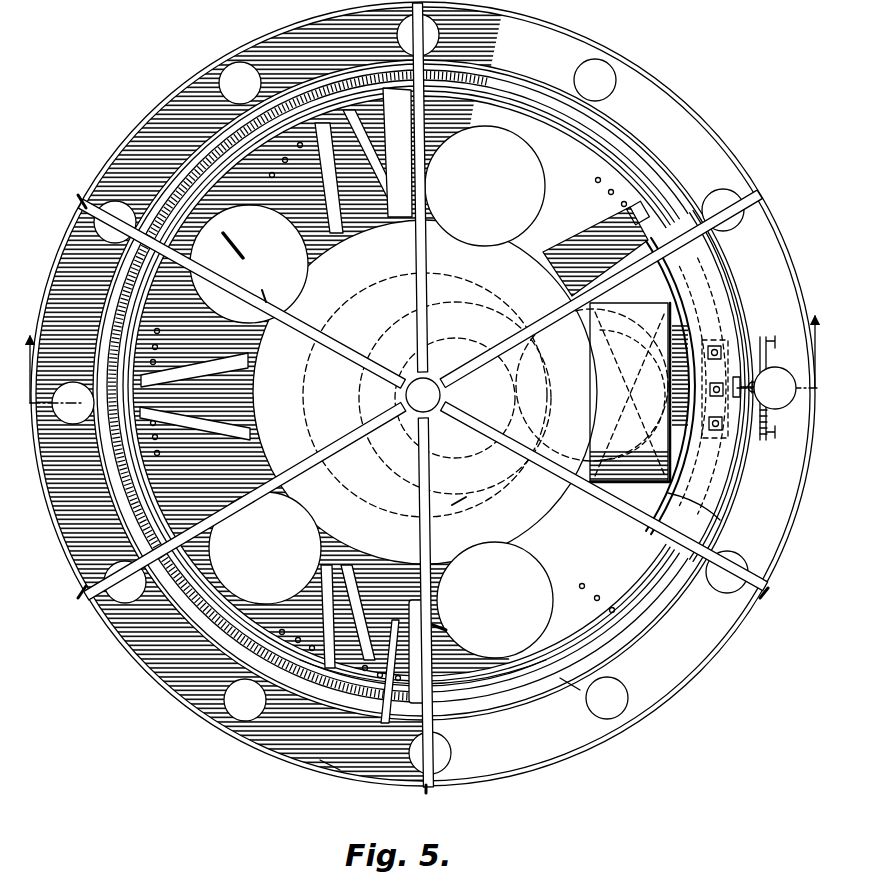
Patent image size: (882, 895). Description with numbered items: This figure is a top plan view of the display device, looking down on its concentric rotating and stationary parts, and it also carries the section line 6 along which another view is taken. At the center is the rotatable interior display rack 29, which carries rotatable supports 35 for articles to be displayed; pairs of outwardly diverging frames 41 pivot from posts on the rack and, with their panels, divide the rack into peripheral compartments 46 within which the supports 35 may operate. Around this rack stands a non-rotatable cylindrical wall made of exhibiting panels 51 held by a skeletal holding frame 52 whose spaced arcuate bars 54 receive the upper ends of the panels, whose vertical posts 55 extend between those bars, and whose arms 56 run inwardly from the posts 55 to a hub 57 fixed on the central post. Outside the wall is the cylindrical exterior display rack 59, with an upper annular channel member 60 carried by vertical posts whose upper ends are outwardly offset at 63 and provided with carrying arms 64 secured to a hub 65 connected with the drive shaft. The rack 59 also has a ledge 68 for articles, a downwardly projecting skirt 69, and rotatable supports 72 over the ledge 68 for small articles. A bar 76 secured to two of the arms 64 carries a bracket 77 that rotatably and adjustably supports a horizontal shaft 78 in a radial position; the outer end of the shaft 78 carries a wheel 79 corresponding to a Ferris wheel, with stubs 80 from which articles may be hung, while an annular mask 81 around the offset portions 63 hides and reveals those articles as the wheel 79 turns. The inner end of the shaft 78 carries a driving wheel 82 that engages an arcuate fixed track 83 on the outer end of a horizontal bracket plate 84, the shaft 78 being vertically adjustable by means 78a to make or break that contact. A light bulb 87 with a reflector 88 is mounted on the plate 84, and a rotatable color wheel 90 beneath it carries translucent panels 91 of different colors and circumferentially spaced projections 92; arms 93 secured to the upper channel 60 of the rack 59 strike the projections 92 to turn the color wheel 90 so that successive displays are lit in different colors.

The section line 6- 6 is at (419, 344).
The interior display rack 29 is at (600, 632).
The rotatable supports 35 is at (371, 392).
The outwardly diverging frames 41 is at (220, 378).
The peripheral compartments 46 is at (576, 591).
The exhibiting panels 51 is at (640, 152).
The skeletal holding frame 52 is at (523, 688).
The arcuate bars 54 is at (560, 678).
The vertical posts 55 is at (687, 568).
The arms 56 is at (421, 189).
The hub 57 is at (458, 506).
The exterior display rack 59 is at (167, 690).
The upper annular channel member 60 is at (495, 720).
The outwardly offset portions 63 is at (88, 203).
The carrying arms 64 is at (438, 549).
The hub 65 is at (425, 392).
The ledge 68 is at (330, 768).
The skirt 69 is at (118, 152).
The rotatable supports 72 is at (235, 76).
The bar 76 is at (717, 290).
The bracket 77 is at (730, 323).
The horizontal shaft 78 is at (755, 432).
The adjusting means 78a is at (717, 398).
The wheel 79 is at (758, 334).
The stubs 80 is at (773, 431).
The annular mask 81 is at (74, 228).
The driving wheel 82 is at (716, 340).
The arcuate fixed track 83 is at (670, 493).
The bracket plate 84 is at (566, 266).
The light bulb 87 is at (602, 378).
The reflector 88 is at (639, 392).
The color wheel 90 is at (527, 300).
The translucent panels 91 is at (483, 496).
The projections 92 is at (484, 321).
The arms 93 is at (226, 243).